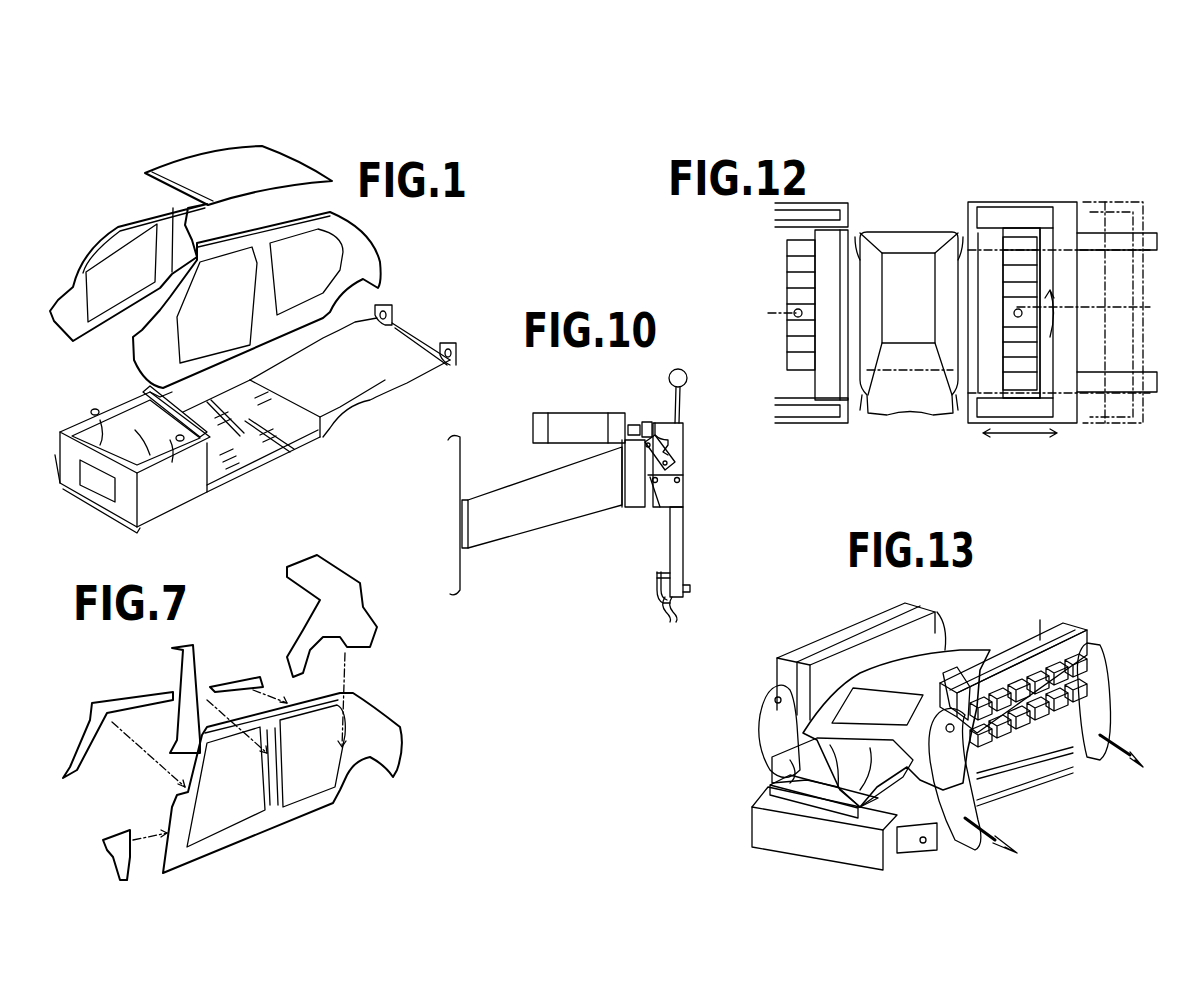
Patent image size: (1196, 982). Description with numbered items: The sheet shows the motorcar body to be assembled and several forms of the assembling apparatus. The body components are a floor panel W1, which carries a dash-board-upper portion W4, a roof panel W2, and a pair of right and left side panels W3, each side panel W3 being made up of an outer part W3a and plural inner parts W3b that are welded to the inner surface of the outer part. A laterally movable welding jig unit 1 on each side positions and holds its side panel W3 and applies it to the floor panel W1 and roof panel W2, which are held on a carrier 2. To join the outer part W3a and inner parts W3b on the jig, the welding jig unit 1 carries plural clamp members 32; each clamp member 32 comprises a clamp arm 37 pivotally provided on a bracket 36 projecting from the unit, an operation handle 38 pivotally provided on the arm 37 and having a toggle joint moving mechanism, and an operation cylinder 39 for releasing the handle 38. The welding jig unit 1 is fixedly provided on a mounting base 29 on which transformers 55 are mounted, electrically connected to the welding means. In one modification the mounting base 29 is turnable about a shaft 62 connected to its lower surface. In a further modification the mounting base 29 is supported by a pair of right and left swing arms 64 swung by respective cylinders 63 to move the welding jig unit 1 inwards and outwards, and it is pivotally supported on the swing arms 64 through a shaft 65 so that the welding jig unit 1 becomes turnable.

In FIG. 10, the welding jig unit 1 is at (462, 437).
In FIG. 12, the welding jig unit 1 is at (850, 428).
In FIG. 13, the welding jig unit 1 is at (862, 640).
In FIG. 13, the carrier 2 is at (827, 803).
In FIG. 12, the mounting base 29 is at (828, 380).
In FIG. 13, the mounting base 29 is at (818, 650).
In FIG. 10, the clamp member 32 is at (636, 402).
In FIG. 10, the bracket 36 is at (542, 515).
In FIG. 10, the clamp arm 37 is at (683, 545).
In FIG. 10, the operation handle 38 is at (682, 405).
In FIG. 10, the operation cylinder 39 is at (560, 420).
In FIG. 12, the transformer 55 is at (790, 263).
In FIG. 12, the shaft 62 is at (956, 313).
In FIG. 13, the cylinder 63 is at (1108, 752).
In FIG. 13, the swing arm 64 is at (765, 728).
In FIG. 13, the shaft 65 is at (775, 700).
In FIG. 1, the floor panel W1 is at (295, 452).
In FIG. 12, the floor panel W1 is at (905, 415).
In FIG. 13, the floor panel W1 is at (845, 790).
In FIG. 1, the roof panel W2 is at (177, 173).
In FIG. 12, the roof panel W2 is at (905, 265).
In FIG. 13, the roof panel W2 is at (945, 657).
In FIG. 1, the side panel W3 is at (83, 257).
In FIG. 7, the side panel W3 is at (314, 826).
In FIG. 12, the side panel W3 is at (857, 235).
In FIG. 13, the side panel W3 is at (915, 770).
In FIG. 7, the outer part W3a is at (265, 827).
In FIG. 10, the outer part W3a is at (662, 603).
In FIG. 7, the inner parts W3b is at (298, 637).
In FIG. 10, the inner parts W3b is at (680, 613).
In FIG. 1, the dash-board-upper portion W4 is at (142, 393).